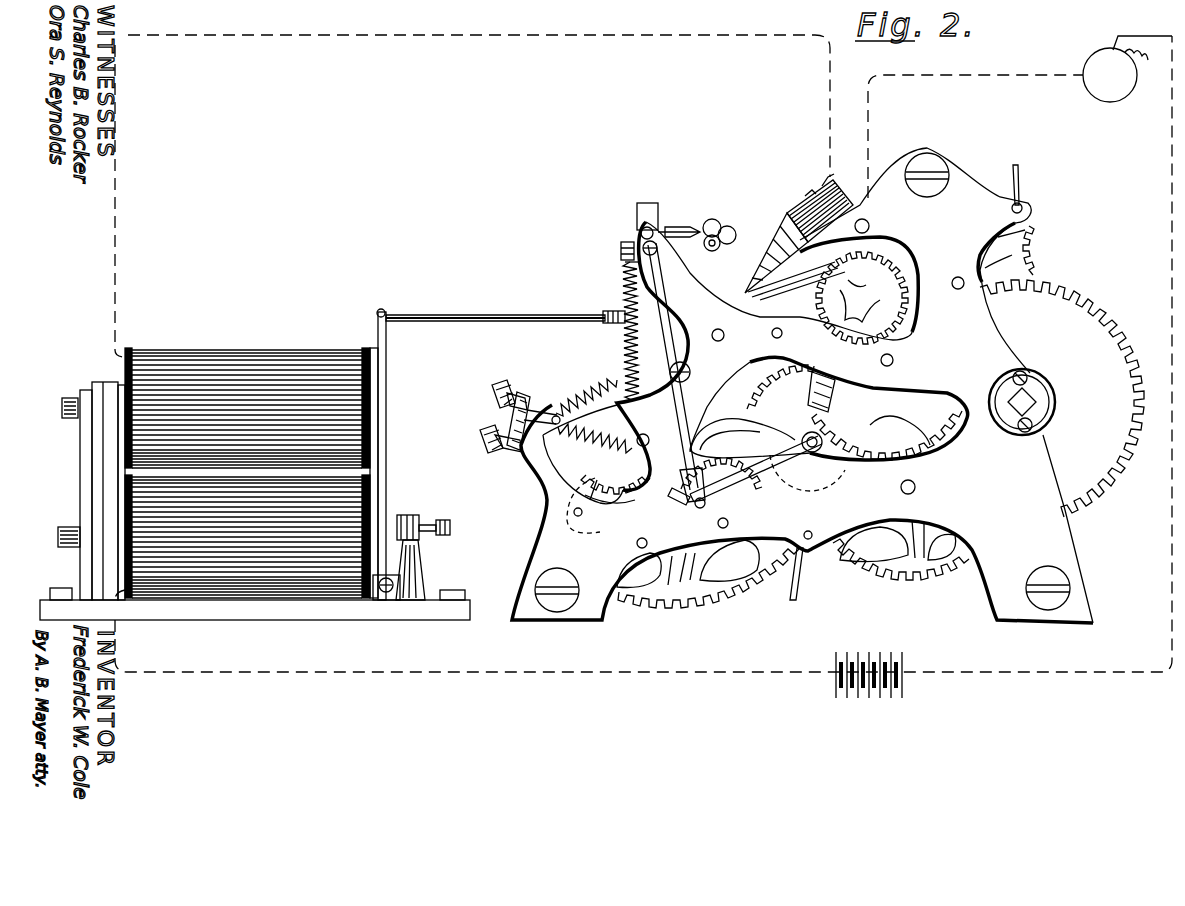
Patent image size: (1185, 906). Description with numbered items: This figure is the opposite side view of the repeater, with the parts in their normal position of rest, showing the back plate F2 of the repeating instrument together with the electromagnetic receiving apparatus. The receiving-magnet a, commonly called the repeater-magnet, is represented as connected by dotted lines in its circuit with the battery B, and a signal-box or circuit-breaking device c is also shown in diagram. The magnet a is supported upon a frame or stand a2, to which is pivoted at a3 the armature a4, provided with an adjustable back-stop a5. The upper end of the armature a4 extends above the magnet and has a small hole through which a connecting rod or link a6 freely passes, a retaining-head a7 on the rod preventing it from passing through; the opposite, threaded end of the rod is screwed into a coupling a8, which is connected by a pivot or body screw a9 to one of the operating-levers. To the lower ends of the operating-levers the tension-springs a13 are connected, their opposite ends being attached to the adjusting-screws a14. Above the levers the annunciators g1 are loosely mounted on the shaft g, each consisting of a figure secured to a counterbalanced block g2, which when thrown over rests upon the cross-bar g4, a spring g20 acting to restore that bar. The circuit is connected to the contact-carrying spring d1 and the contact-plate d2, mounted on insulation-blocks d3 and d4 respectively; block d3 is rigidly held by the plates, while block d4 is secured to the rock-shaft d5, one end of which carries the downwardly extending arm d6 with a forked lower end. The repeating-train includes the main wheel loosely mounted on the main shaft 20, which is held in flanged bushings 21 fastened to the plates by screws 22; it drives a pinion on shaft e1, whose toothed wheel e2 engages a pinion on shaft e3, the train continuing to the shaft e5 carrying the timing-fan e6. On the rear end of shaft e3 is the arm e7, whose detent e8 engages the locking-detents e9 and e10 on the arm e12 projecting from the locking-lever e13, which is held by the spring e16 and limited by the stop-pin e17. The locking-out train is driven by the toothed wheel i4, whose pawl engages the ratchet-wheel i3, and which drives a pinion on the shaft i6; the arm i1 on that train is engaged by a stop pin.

The receiving-magnet a is at (255, 358).
The frame or stand a2 is at (80, 468).
The pivot a3 is at (420, 562).
The armature a4 is at (388, 332).
The adjustable back-stop a5 is at (395, 520).
The connecting rod or link a6 is at (470, 316).
The retaining-head a7 is at (376, 311).
The coupling a8 is at (612, 316).
The pivot or body screw a9 is at (625, 322).
The tension-spring a13 is at (608, 440).
The adjusting-screw a14 is at (494, 385).
The shaft g is at (642, 237).
The annunciator g1 is at (688, 232).
The counterbalanced block g2 is at (640, 205).
The cross-bar g4 is at (625, 247).
The spring g20 is at (626, 278).
The contact-carrying spring d1 is at (770, 262).
The contact-plate d2 is at (793, 281).
The insulation-block d3 is at (840, 178).
The insulation-block d4 is at (802, 286).
The rock-shaft d5 is at (870, 228).
The arm d6 is at (848, 338).
The shaft i6 is at (893, 360).
The back plate F2 is at (802, 385).
The toothed wheel i4 is at (1050, 325).
The screw 22 is at (1022, 380).
The flanged bushing 21 is at (1040, 402).
The main shaft 20 is at (1058, 402).
The arm i1 is at (962, 435).
The ratchet-wheel i3 is at (823, 392).
The locking-lever e13 is at (690, 367).
The arm e12 is at (795, 405).
The spring e16 is at (570, 392).
The stop-pin e17 is at (603, 476).
The locking-detent e10 is at (678, 499).
The detent e8 is at (700, 505).
The locking-detent e9 is at (724, 508).
The arm e7 is at (765, 470).
The shaft e3 is at (814, 455).
The shaft e5 is at (812, 533).
The shaft e1 is at (915, 487).
The toothed wheel e2 is at (942, 565).
The timing-fan e6 is at (800, 592).
The signal-box or circuit-breaking device c is at (1137, 75).
The battery B is at (835, 690).